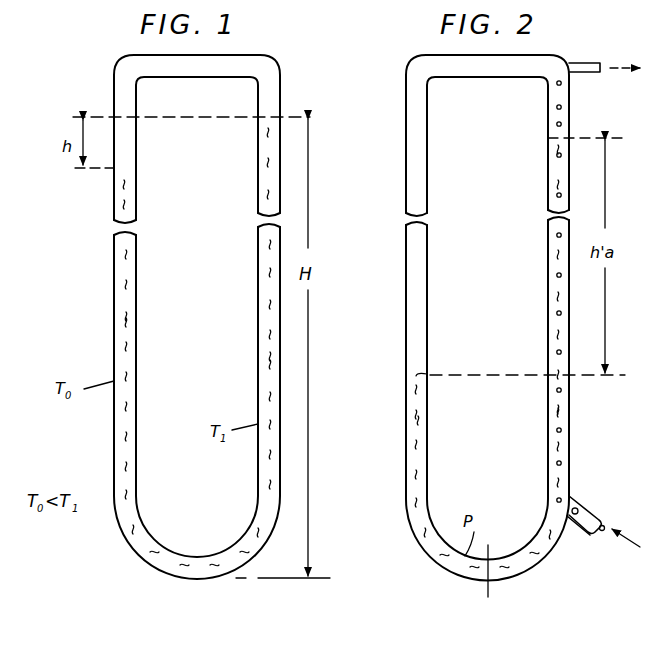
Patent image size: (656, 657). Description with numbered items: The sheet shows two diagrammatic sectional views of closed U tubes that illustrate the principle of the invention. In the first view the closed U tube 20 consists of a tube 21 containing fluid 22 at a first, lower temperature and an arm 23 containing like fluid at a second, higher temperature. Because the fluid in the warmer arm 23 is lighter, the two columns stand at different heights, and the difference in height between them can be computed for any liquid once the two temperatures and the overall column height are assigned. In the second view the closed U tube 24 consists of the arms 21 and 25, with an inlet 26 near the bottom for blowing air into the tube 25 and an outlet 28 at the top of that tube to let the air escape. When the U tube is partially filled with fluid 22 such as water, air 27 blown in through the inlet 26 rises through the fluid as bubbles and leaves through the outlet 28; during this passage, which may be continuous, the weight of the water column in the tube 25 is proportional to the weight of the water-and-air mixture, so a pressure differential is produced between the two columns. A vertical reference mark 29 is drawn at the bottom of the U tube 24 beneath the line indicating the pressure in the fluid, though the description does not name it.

In FIG. 1, the closed U tube 20 is at (100, 72).
In FIG. 1, the tube 21 is at (112, 284).
In FIG. 2, the tube 21 is at (404, 332).
In FIG. 1, the fluid 22 is at (122, 322).
In FIG. 2, the fluid 22 is at (424, 422).
In FIG. 1, the arm 23 is at (257, 300).
In FIG. 2, the closed U tube 24 is at (402, 67).
In FIG. 2, the tube 25 is at (571, 465).
In FIG. 2, the inlet 26 is at (586, 510).
In FIG. 2, the air 27 is at (566, 436).
In FIG. 2, the outlet 28 is at (592, 62).
In FIG. 2, the plane of symmetry 29 is at (483, 597).